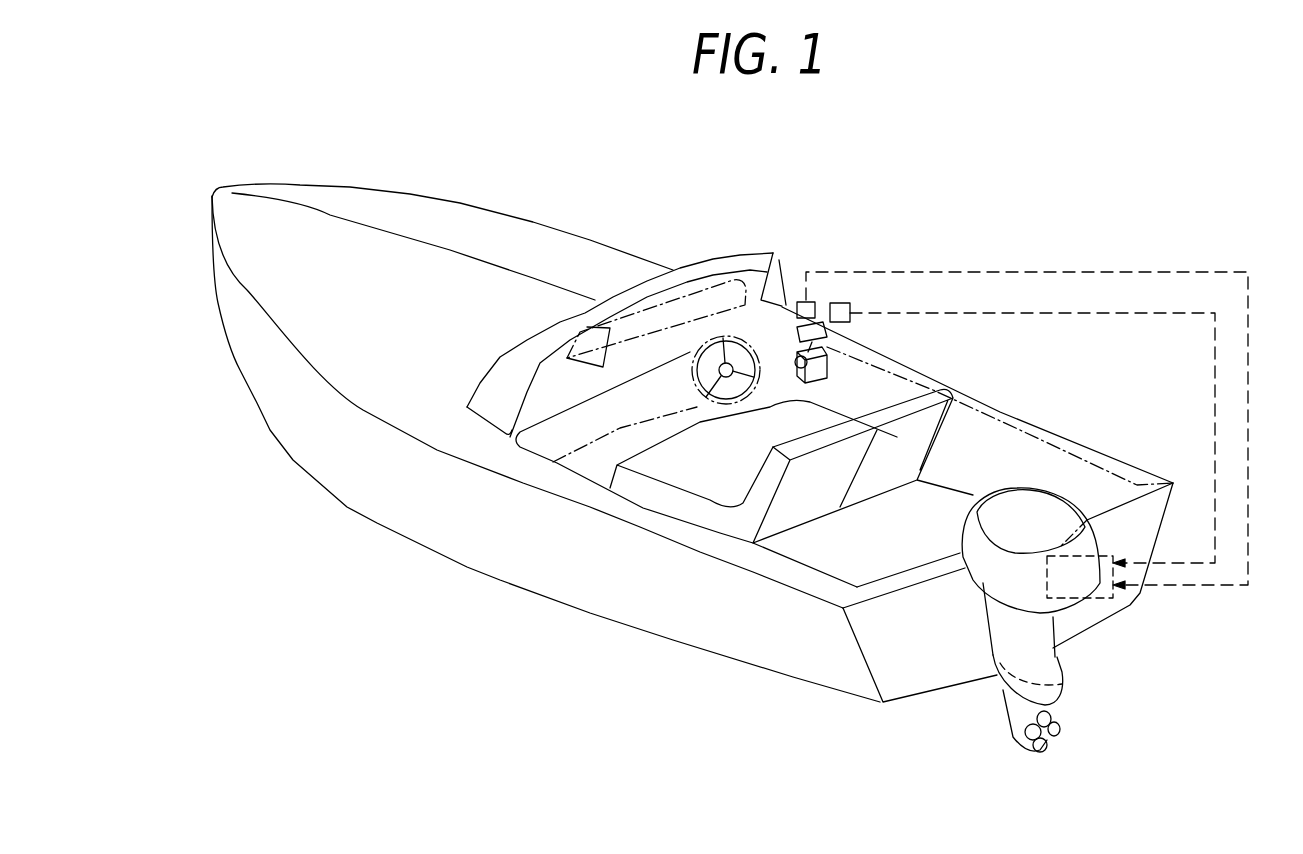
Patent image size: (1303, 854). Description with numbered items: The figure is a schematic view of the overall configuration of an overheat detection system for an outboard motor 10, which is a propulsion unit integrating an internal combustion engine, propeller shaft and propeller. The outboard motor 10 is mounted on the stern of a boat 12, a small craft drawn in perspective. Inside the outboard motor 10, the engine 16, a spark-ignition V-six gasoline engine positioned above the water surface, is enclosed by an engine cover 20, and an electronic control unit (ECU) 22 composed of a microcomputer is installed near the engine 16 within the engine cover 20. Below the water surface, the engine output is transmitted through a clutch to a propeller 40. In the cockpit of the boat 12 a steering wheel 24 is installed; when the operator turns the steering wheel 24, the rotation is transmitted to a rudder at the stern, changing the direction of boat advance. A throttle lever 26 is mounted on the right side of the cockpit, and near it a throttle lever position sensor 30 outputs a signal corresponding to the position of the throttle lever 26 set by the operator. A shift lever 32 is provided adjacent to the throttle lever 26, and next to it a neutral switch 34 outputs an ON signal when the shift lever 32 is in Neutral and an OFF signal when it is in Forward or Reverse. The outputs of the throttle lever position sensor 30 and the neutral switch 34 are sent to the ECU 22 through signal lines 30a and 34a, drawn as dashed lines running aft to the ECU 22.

The outboard motor 10 is at (730, 463).
The boat 12 is at (500, 233).
The internal combustion engine 16 is at (1048, 633).
The engine cover 20 is at (1050, 532).
The electronic control unit (ECU) 22 is at (1107, 602).
The steering wheel 24 is at (693, 388).
The throttle lever 26 is at (830, 342).
The throttle lever position sensor 30 is at (849, 304).
The signal line 30a is at (1110, 318).
The shift lever 32 is at (800, 333).
The neutral switch 34 is at (805, 272).
The signal line 34a is at (1085, 270).
The propeller 40 is at (1060, 737).